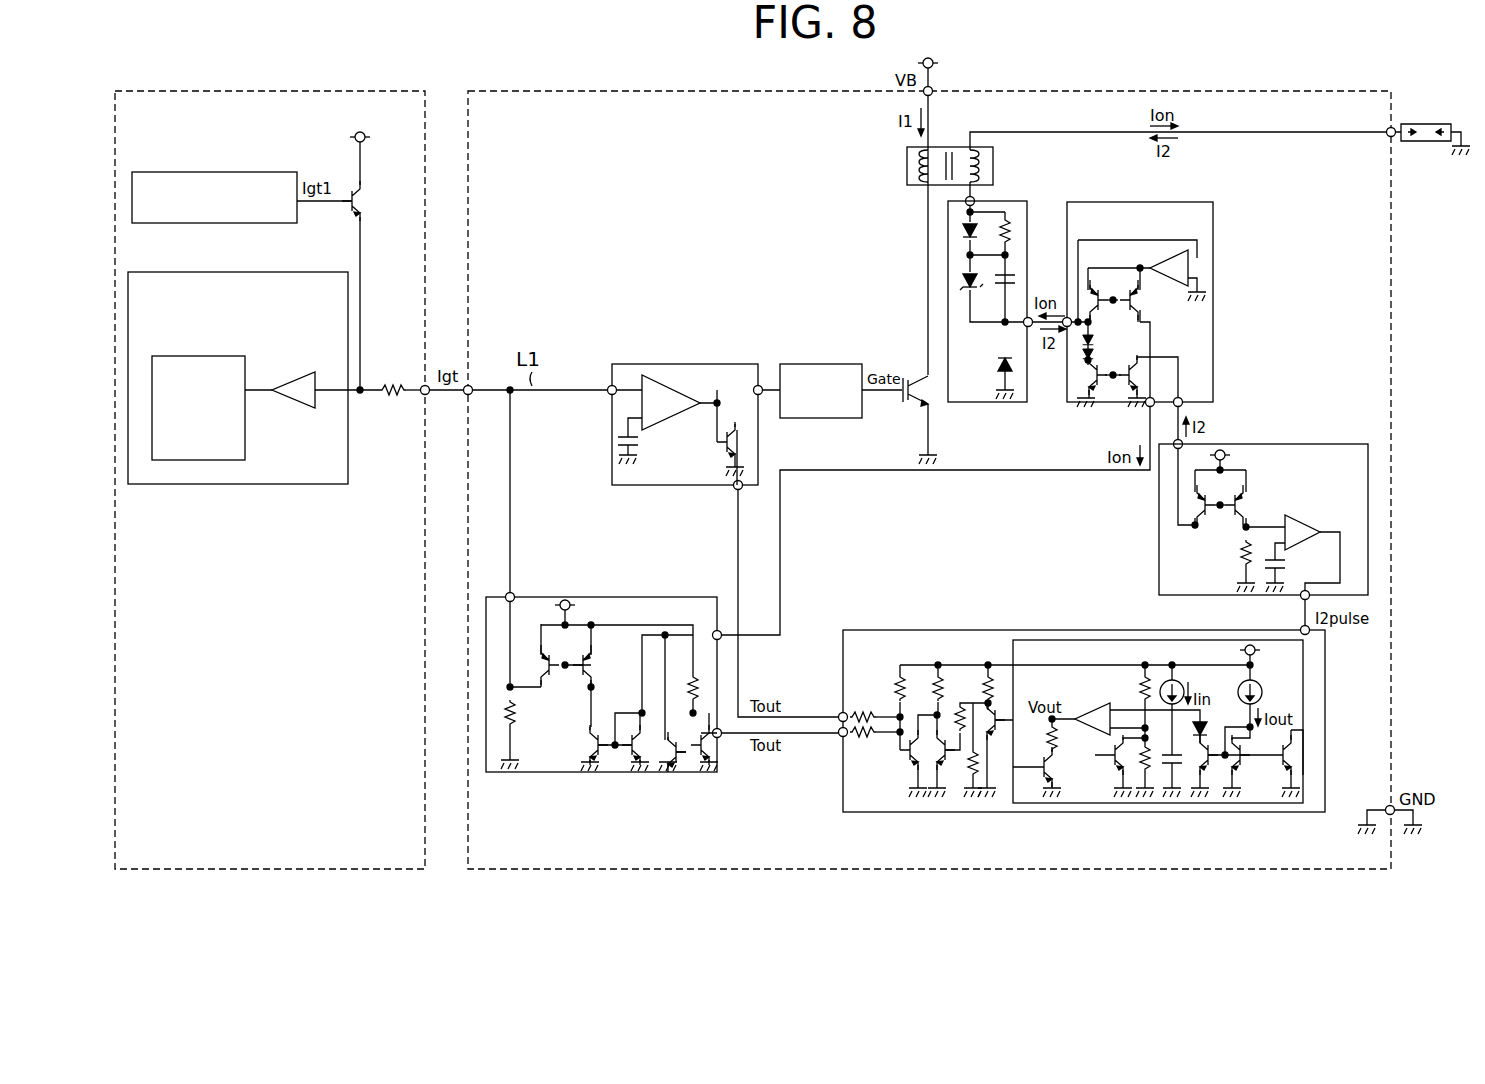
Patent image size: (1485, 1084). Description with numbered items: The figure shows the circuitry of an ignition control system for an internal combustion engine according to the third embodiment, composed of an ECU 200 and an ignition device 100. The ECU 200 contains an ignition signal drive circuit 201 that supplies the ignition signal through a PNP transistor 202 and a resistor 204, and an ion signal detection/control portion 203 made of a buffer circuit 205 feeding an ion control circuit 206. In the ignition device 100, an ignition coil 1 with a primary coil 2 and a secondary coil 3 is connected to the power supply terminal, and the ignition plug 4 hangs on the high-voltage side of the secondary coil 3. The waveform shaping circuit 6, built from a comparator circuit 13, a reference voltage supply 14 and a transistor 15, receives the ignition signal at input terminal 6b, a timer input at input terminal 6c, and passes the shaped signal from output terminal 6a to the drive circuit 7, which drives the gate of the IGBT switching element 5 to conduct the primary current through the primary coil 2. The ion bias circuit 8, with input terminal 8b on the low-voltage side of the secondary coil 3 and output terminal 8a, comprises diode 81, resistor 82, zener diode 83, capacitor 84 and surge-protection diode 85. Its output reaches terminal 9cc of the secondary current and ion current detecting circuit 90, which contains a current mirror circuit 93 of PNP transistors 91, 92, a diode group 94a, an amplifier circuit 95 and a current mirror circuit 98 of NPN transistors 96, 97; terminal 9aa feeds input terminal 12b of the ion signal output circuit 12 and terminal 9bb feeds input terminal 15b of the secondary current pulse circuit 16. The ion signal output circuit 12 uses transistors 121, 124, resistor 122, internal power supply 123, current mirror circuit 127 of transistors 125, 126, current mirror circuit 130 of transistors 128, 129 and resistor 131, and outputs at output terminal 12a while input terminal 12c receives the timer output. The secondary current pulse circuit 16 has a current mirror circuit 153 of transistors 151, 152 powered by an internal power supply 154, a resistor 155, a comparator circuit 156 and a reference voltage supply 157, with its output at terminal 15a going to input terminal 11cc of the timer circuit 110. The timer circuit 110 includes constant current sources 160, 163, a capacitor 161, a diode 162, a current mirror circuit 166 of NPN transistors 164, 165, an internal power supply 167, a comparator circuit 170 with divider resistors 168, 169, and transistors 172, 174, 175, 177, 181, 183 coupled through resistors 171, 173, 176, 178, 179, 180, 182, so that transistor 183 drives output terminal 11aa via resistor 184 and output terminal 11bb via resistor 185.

The electronic control unit (ECU) 200 is at (238, 91).
The ignition signal drive circuit 201 is at (240, 172).
The PNP transistor 202 is at (366, 206).
The ion signal detection/control portion 203 is at (238, 272).
The resistor 204 is at (393, 382).
The buffer circuit 205 is at (292, 375).
The ion control circuit 206 is at (205, 355).
The ignition device 100 is at (595, 91).
The ignition coil 1 is at (907, 154).
The primary coil 2 is at (918, 166).
The secondary coil 3 is at (970, 145).
The ignition plug 4 is at (1427, 124).
The switching element 5 is at (912, 369).
The ignition signal waveform shaping circuit 6 is at (625, 364).
The output terminal 6a is at (761, 386).
The input terminal 6b is at (608, 387).
The input terminal 6c is at (734, 488).
The drive circuit 7 is at (818, 364).
The ion bias circuit 8 is at (1027, 205).
The output terminal 8a is at (1030, 326).
The input terminal 8b is at (974, 198).
The diode 81 is at (963, 236).
The resistor 82 is at (1000, 241).
The zener diode 83 is at (963, 284).
The capacitor 84 is at (995, 288).
The diode 85 is at (1002, 380).
The secondary current and ion current detecting circuit 90 is at (1188, 202).
The transistor 91 is at (1094, 263).
The transistor 92 is at (1138, 300).
The current mirror circuit 93 is at (1113, 290).
The diode group 94a is at (1113, 348).
The amplifier circuit 95 is at (1170, 250).
The transistor 96 is at (1085, 390).
The transistor 97 is at (1135, 377).
The current mirror circuit 98 is at (1113, 387).
The terminal 9aa is at (1147, 406).
The terminal 9bb is at (1182, 404).
The terminal 9cc is at (1064, 317).
The comparator circuit 13 is at (664, 380).
The reference voltage supply 14 is at (618, 430).
The transistor 15 is at (742, 439).
The terminal 15a is at (1300, 596).
The input terminal 15b is at (1183, 444).
The secondary current pulse circuit 16 is at (1343, 444).
The transistor 151 is at (1200, 508).
The transistor 152 is at (1240, 505).
The current mirror circuit 153 is at (1220, 493).
The internal power supply 154 is at (1227, 456).
The resistor 155 is at (1240, 553).
The comparator circuit 156 is at (1304, 520).
The reference voltage supply 157 is at (1285, 562).
The ion signal output circuit 12 is at (650, 597).
The output terminal 12a is at (510, 597).
The input terminal 12b is at (717, 635).
The input terminal 12c is at (717, 736).
The transistor 121 is at (710, 762).
The resistor 122 is at (700, 684).
The internal power supply 123 is at (567, 603).
The transistor 124 is at (674, 764).
The transistor 125 is at (642, 750).
The transistor 126 is at (588, 743).
The current mirror circuit 127 is at (623, 740).
The transistor 128 is at (596, 667).
The transistor 129 is at (535, 611).
The current mirror circuit 130 is at (559, 660).
The resistor 131 is at (514, 708).
The timer circuit 110 is at (1072, 630).
The output terminal 11aa is at (838, 714).
The output terminal 11bb is at (839, 736).
The input terminal 11cc is at (1302, 628).
The constant current source 160 is at (1186, 683).
The capacitor 161 is at (1147, 775).
The diode 162 is at (1175, 782).
The constant current source 163 is at (1262, 684).
The transistor 164 is at (1200, 738).
The transistor 165 is at (1290, 772).
The current mirror circuit 166 is at (1242, 762).
The internal power supply 167 is at (1255, 650).
The resistor 168 is at (1143, 675).
The resistor 169 is at (1135, 787).
The comparator circuit 170 is at (1083, 707).
The resistor 171 is at (1052, 787).
The transistor 172 is at (1117, 765).
The resistor 173 is at (1007, 715).
The transistor 174 is at (973, 776).
The transistor 175 is at (990, 737).
The resistor 176 is at (988, 659).
The transistor 177 is at (1295, 733).
The resistor 178 is at (962, 735).
The resistor 179 is at (948, 665).
The resistor 180 is at (938, 659).
The transistor 181 is at (950, 782).
The resistor 182 is at (897, 659).
The transistor 183 is at (918, 765).
The resistor 184 is at (865, 714).
The resistor 185 is at (865, 736).